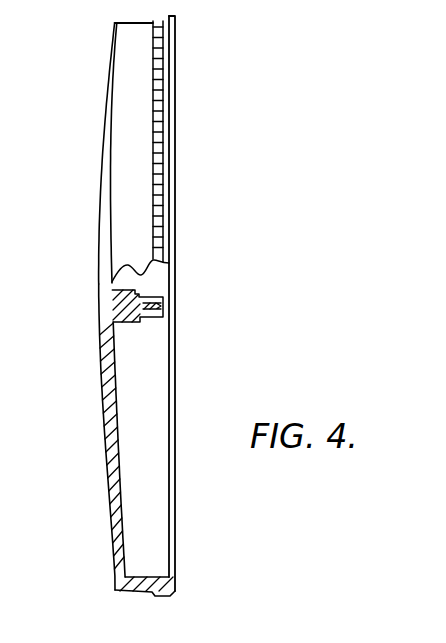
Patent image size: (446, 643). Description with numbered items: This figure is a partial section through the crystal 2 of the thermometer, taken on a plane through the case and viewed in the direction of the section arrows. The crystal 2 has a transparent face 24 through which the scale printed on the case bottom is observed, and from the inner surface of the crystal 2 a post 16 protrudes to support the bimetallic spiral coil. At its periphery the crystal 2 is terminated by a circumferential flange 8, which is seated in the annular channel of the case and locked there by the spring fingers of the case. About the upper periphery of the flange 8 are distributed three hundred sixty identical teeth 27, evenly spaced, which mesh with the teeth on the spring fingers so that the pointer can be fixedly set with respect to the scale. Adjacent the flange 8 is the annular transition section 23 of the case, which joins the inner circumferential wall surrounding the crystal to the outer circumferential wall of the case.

The crystal 2 is at (84, 335).
The circumferential flange 8 is at (176, 108).
The post 16 is at (137, 334).
The annular transition section 23 is at (104, 426).
The transparent face 24 is at (147, 148).
The teeth 27 is at (152, 113).